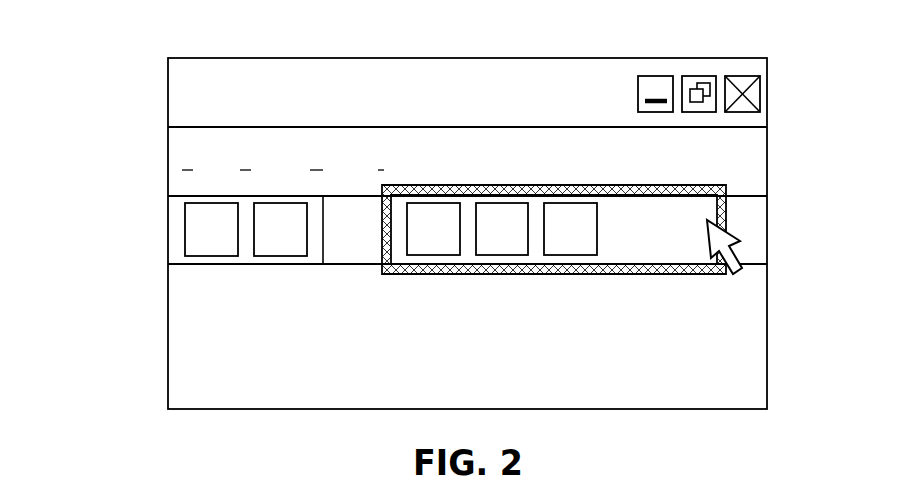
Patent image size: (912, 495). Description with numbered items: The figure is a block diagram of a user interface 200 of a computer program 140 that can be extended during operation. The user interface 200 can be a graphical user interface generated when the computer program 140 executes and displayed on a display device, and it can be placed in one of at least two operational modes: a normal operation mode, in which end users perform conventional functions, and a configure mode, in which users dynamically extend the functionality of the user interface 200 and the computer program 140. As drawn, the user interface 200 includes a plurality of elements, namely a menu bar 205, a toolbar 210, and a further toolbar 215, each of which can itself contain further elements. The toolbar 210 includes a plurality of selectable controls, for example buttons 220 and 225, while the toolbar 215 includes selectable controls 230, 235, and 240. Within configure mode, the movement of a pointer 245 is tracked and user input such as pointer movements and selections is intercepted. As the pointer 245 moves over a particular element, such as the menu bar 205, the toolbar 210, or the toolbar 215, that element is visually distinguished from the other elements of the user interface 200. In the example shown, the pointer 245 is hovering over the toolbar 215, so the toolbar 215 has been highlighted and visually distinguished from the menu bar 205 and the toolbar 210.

The user interface 200 is at (484, 35).
The computer program 140 is at (259, 93).
The menu bar 205 is at (177, 140).
The toolbar 210 is at (177, 235).
The toolbar 215 is at (694, 207).
The selectable control 220 is at (211, 229).
The selectable control 225 is at (280, 229).
The selectable control 230 is at (433, 229).
The selectable control 235 is at (502, 229).
The selectable control 240 is at (570, 229).
The pointer 245 is at (741, 240).